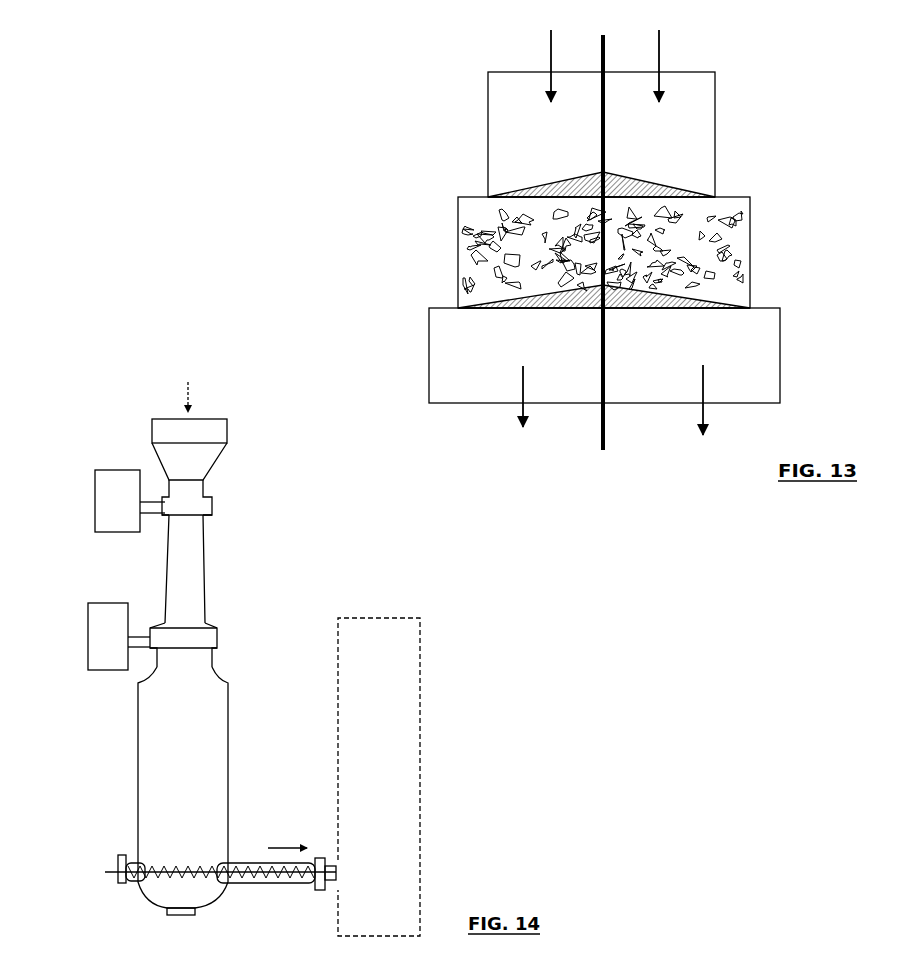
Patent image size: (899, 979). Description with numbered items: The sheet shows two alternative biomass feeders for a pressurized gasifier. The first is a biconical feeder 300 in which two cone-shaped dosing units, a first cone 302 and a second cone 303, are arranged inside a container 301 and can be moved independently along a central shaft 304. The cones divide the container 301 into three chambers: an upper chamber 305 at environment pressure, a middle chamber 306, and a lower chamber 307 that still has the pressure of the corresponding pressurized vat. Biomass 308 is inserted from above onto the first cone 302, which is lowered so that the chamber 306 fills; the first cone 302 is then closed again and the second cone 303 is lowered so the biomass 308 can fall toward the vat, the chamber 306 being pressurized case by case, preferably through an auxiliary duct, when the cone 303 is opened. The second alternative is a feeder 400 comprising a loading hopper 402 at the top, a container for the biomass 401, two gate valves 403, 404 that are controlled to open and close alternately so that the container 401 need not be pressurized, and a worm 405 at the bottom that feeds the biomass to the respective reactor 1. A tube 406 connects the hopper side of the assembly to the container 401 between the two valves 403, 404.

In FIG. 13, the biconical feeder 300 is at (440, 115).
In FIG. 13, the container 301 is at (715, 108).
In FIG. 13, the first cone 302 is at (665, 187).
In FIG. 13, the second cone 303 is at (705, 310).
In FIG. 13, the shaft 304 is at (607, 446).
In FIG. 13, the first chamber 305 is at (517, 167).
In FIG. 13, the second chamber 306 is at (463, 292).
In FIG. 13, the third chamber 307 is at (445, 373).
In FIG. 13, the biomass 308 is at (737, 263).
In FIG. 14, the feeder 400 is at (287, 568).
In FIG. 14, the container for the biomass 401 is at (145, 750).
In FIG. 14, the loading hopper 402 is at (175, 437).
In FIG. 14, the first gate valve 403 is at (118, 507).
In FIG. 14, the second gate valve 404 is at (105, 635).
In FIG. 14, the worm 405 is at (287, 889).
In FIG. 14, the feed tube 406 is at (180, 582).
In FIG. 14, the reactor 1 is at (370, 618).